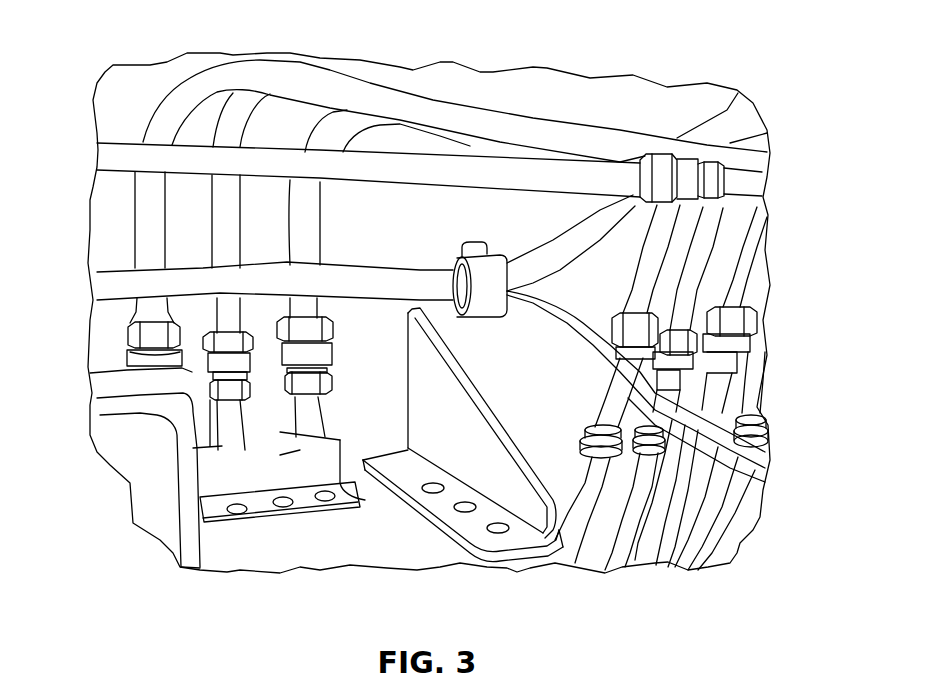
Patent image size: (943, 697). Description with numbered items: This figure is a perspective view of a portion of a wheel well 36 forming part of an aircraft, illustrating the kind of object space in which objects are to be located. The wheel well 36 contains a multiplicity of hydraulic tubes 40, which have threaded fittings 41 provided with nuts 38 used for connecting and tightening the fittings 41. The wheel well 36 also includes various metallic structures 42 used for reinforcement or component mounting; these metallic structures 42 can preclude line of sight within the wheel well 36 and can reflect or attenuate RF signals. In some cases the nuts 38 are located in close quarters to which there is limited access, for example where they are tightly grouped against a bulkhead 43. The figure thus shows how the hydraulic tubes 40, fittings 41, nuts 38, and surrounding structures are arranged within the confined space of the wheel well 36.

The wheel well 36 is at (148, 97).
The bulkhead 43 is at (538, 100).
The hydraulic tubes 40 is at (227, 213).
The threaded fittings 41 is at (121, 337).
The nuts 38 is at (305, 338).
The metallic structures 42 is at (360, 537).